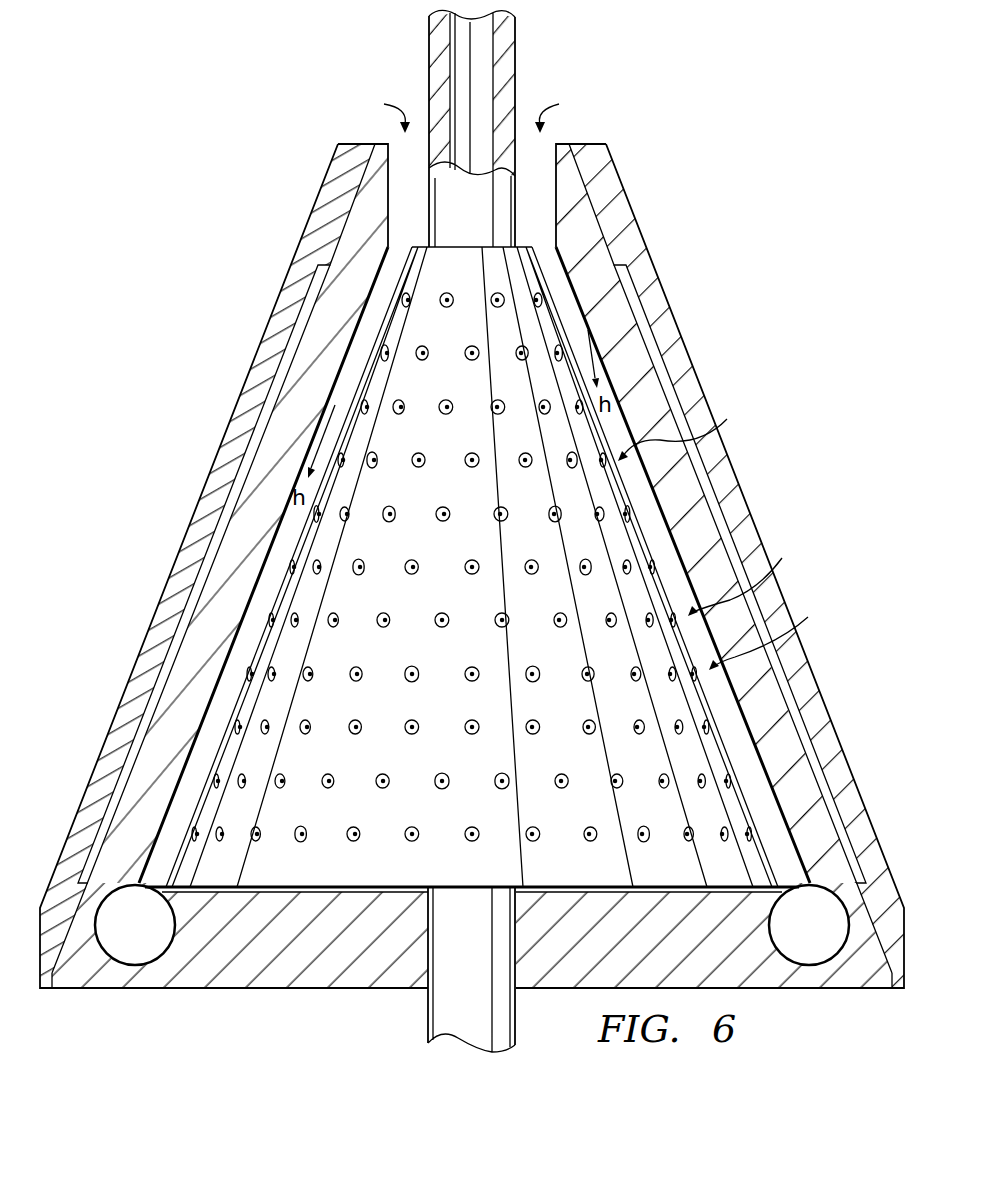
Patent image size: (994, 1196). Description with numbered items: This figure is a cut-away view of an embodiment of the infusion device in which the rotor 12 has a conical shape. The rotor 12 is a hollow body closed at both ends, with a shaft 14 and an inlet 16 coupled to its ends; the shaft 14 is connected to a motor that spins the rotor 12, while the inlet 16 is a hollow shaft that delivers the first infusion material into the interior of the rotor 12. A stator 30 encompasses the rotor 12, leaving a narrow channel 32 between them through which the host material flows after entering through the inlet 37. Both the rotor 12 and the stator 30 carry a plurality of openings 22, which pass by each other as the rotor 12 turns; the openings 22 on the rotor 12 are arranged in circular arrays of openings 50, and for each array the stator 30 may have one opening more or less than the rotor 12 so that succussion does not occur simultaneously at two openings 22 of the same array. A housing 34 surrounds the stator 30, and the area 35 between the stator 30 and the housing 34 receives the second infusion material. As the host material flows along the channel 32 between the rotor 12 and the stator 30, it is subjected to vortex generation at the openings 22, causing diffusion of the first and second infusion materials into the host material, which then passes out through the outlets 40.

The rotor 12 is at (421, 244).
The shaft 14 is at (517, 58).
The inlet 16 is at (428, 1013).
The openings 22 is at (496, 297).
The stator 30 is at (638, 372).
The channel 32 is at (190, 756).
The housing 34 is at (276, 318).
The area 35 is at (240, 470).
The inlet 37 is at (473, 104).
The outlet 40 is at (149, 939).
The circular arrays of openings 50 is at (726, 530).